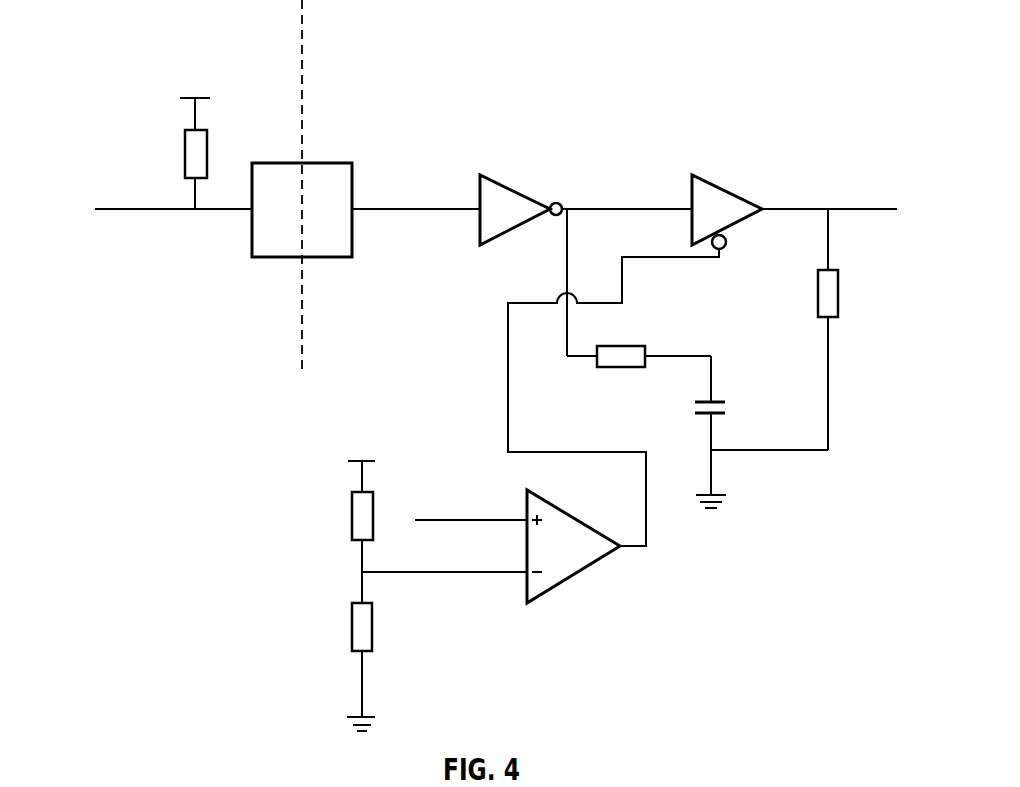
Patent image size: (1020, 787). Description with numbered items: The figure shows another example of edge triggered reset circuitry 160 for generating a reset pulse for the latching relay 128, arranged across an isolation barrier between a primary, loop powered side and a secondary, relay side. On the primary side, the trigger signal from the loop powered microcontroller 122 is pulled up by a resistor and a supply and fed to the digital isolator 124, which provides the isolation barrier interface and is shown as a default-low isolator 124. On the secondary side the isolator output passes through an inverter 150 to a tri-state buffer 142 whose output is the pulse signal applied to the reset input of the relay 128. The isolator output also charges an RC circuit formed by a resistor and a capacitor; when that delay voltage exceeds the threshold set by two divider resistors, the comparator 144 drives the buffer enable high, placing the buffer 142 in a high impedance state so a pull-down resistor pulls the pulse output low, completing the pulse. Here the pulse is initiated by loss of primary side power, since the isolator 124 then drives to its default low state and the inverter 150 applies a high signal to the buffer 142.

The edge triggered reset circuitry 160 is at (746, 38).
The digital isolator 124 is at (327, 163).
The inverter 150 is at (519, 194).
The tri-state buffer 142 is at (728, 193).
The comparator 144 is at (575, 574).
The loop powered microcontroller 122 is at (150, 210).
The relay 128 is at (858, 216).